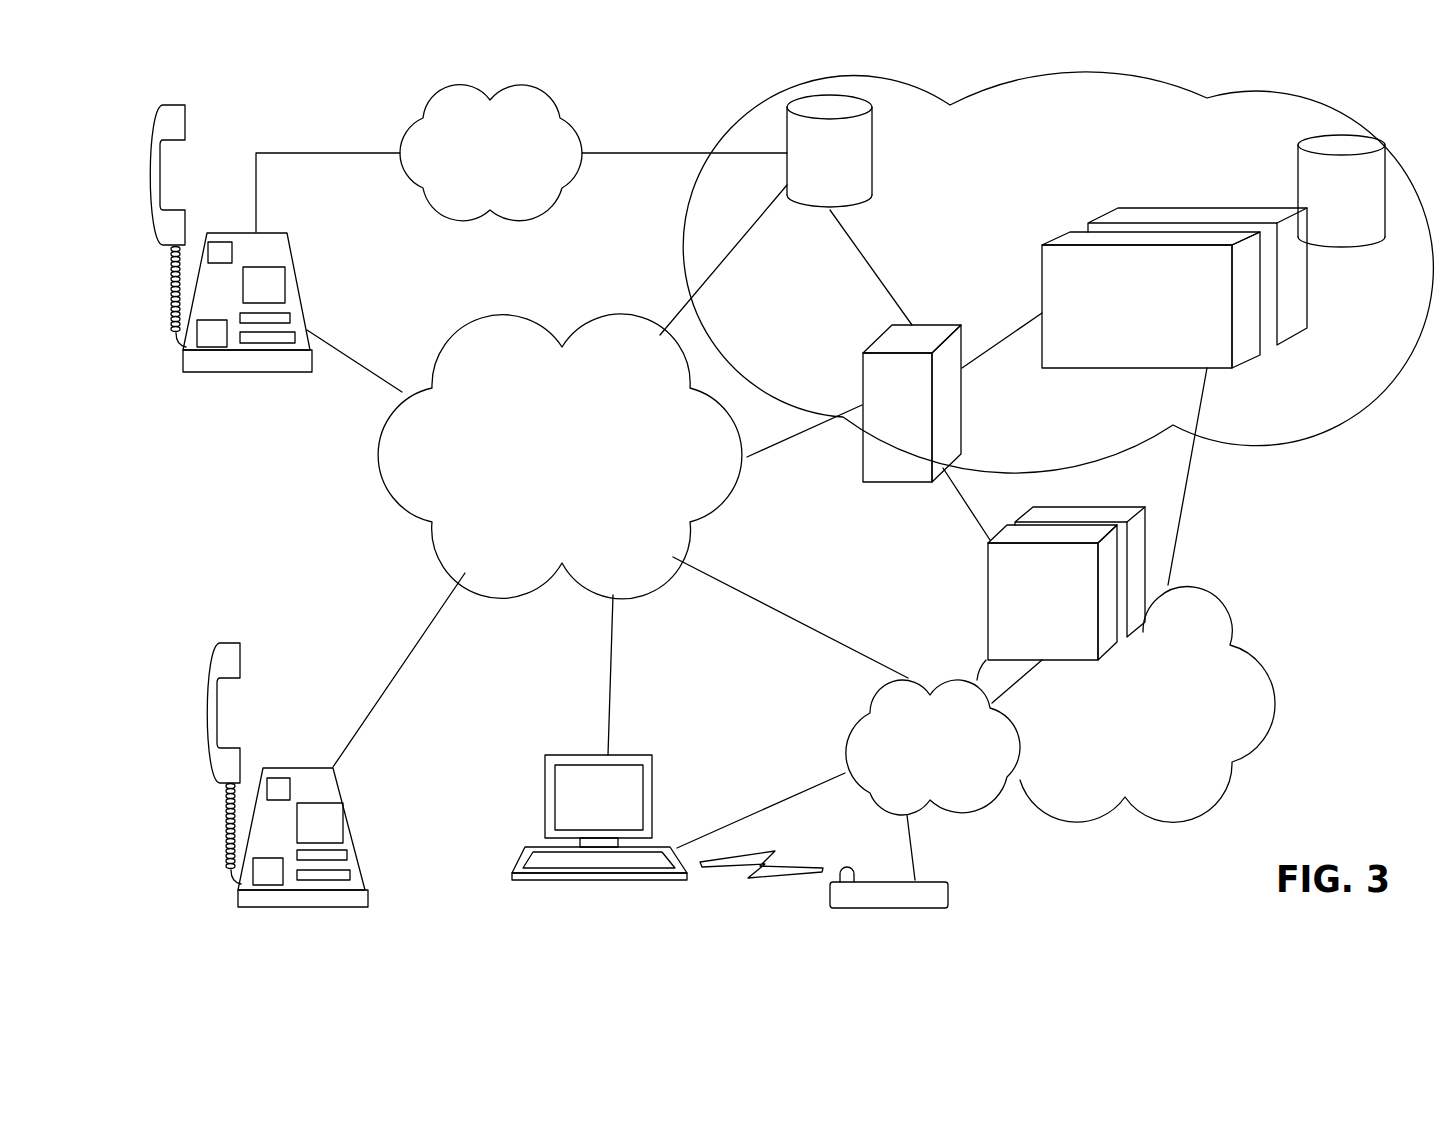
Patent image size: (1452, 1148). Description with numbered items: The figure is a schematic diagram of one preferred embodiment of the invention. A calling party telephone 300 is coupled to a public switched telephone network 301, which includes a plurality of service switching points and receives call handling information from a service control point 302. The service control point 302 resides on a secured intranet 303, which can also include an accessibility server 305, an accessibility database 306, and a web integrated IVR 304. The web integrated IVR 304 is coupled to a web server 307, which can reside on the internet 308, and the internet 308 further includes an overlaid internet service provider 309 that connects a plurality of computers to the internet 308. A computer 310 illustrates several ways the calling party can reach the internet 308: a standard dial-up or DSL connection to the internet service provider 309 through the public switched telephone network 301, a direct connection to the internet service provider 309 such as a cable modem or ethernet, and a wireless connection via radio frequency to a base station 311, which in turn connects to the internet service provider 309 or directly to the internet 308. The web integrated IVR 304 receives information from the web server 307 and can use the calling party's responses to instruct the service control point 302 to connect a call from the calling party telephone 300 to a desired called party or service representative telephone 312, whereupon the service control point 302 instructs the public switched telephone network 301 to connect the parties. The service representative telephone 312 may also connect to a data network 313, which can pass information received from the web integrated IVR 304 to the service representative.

The calling party telephone 300 is at (357, 812).
The public switched telephone network 301 is at (728, 512).
The service control point 302 is at (865, 208).
The secured intranet 303 is at (1308, 445).
The web integrated IVR 304 is at (963, 442).
The accessibility server 305 is at (1103, 370).
The accessibility database 306 is at (1333, 248).
The web server 307 is at (987, 623).
The internet 308 is at (1272, 745).
The internet service provider 309 is at (843, 748).
The computer 310 is at (637, 755).
The base station 311 is at (948, 905).
The desired called party or service representative telephone 312 is at (280, 227).
The data network 313 is at (518, 223).